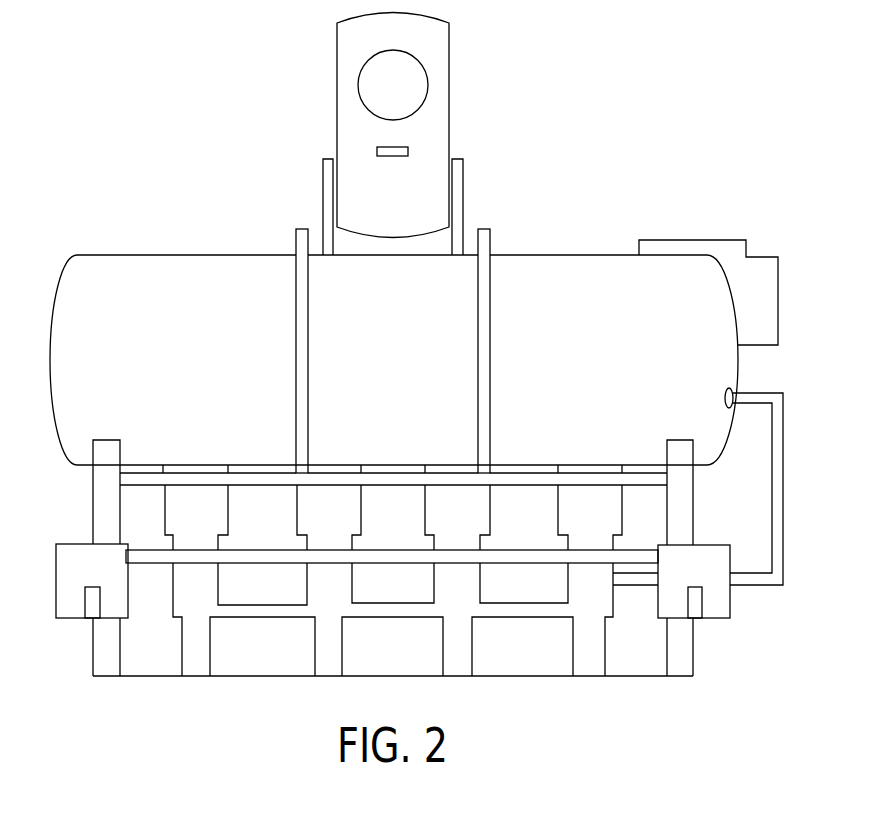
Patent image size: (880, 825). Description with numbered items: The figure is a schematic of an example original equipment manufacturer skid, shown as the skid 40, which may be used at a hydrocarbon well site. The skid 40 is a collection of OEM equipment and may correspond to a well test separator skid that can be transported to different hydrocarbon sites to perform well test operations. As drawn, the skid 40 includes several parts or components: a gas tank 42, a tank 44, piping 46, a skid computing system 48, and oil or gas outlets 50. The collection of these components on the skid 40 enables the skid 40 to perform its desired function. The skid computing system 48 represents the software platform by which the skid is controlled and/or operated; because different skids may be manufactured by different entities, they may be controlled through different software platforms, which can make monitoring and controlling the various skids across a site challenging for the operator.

The skid 40 is at (198, 76).
The gas tank 42 is at (428, 53).
The tank 44 is at (548, 272).
The piping 46 is at (783, 490).
The skid computing system 48 is at (717, 597).
The oil or gas outlets 50 is at (605, 647).